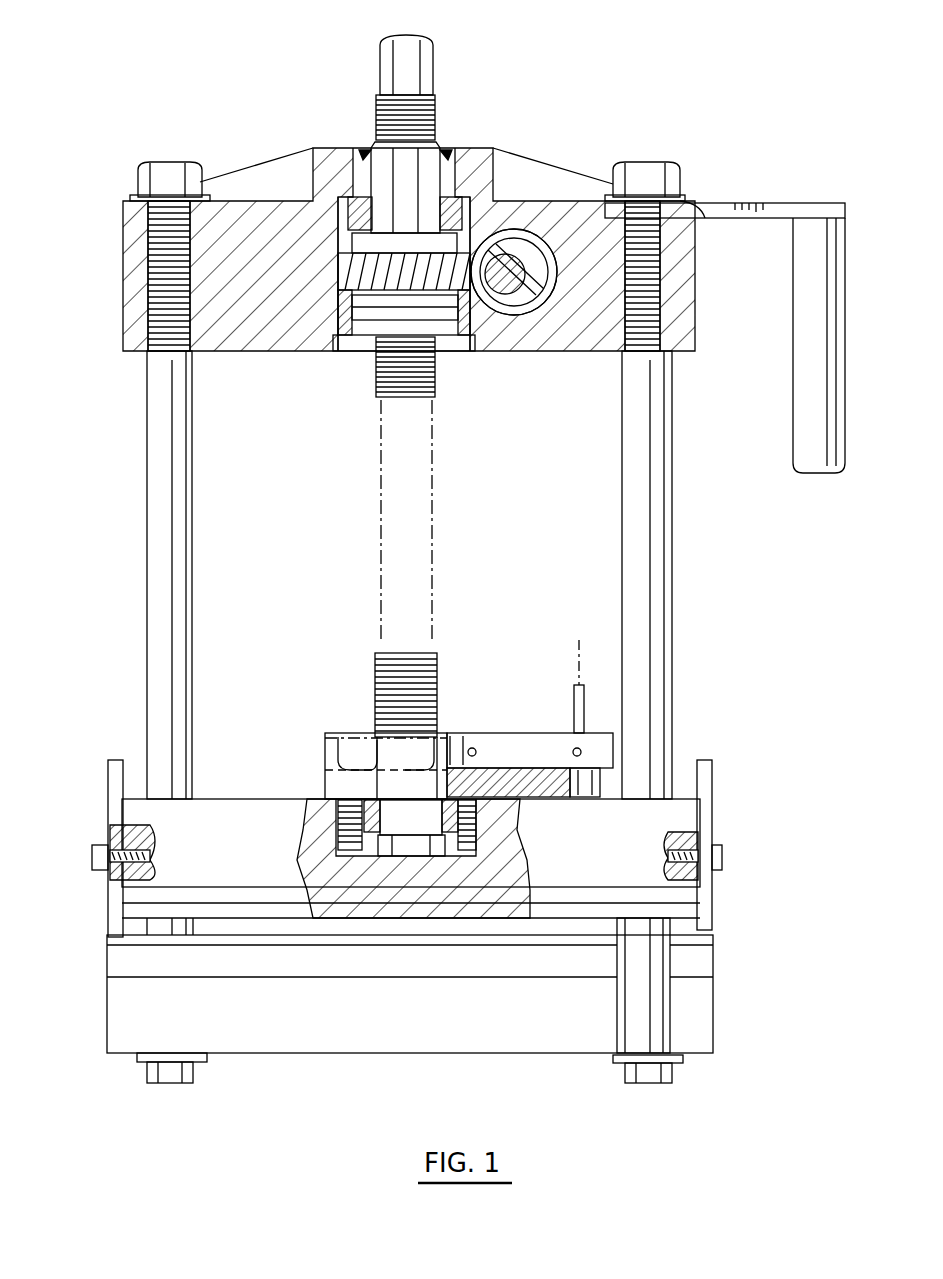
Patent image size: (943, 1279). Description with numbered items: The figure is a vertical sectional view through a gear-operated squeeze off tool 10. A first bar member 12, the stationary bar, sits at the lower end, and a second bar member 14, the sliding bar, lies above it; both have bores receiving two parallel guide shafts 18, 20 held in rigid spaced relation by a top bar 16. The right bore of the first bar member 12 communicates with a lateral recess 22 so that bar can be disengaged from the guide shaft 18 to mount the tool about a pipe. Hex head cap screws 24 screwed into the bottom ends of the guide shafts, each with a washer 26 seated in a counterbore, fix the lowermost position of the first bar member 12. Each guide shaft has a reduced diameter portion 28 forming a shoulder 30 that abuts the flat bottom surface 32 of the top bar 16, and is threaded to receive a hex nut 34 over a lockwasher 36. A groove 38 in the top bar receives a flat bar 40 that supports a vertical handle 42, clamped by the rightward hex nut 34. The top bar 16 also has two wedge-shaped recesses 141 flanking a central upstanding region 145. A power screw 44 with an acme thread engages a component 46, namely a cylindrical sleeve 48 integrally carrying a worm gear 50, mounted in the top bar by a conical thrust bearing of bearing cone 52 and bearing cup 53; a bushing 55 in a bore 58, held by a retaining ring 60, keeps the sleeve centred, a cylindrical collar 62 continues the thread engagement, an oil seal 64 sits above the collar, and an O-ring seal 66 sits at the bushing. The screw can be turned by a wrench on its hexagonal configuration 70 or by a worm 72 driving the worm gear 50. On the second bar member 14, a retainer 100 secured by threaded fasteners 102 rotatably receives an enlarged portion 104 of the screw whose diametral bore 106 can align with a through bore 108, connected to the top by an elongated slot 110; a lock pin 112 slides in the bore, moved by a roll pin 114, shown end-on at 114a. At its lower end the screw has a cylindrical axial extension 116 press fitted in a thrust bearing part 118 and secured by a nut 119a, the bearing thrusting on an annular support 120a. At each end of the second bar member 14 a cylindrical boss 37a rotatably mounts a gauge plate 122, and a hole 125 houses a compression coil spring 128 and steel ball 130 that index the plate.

The gear-operated squeeze off tool 10 is at (735, 567).
The first bar member 12 is at (700, 1002).
The second bar member 14 is at (218, 812).
The top bar 16 is at (555, 205).
The guide shaft 18 is at (660, 535).
The guide shaft 20 is at (148, 520).
The lateral recess 22 is at (620, 988).
The hex head cap screw 24 is at (188, 1078).
The washer 26 is at (140, 1060).
The reduced diameter portion 28 is at (123, 286).
The shoulder 30 is at (125, 368).
The flat bottom surface 32 is at (600, 352).
The hex nut 34 is at (145, 168).
The lockwasher 36 is at (135, 198).
The cylindrical boss 37a is at (115, 810).
The groove 38 is at (705, 222).
The flat bar 40 is at (766, 203).
The handle 42 is at (800, 410).
The power screw 44 is at (380, 467).
The component 46 is at (340, 215).
The cylindrical sleeve 48 is at (392, 245).
The worm gear 50 is at (345, 270).
The bearing cone 52 is at (350, 195).
The bearing cup 53 is at (348, 200).
The bushing 55 is at (445, 350).
The bore 58 is at (350, 305).
The retaining ring 60 is at (482, 350).
The cylindrical collar 62 is at (430, 145).
The oil seal 64 is at (450, 150).
The O-ring seal 66 is at (338, 350).
The hexagonal configuration 70 is at (412, 55).
The worm 72 is at (509, 205).
The retainer 100 is at (505, 795).
The threaded fastener 102 is at (340, 810).
The enlarged portion 104 is at (498, 765).
The diametral bore 106 is at (385, 745).
The through bore 108 is at (328, 760).
The elongated slot 110 is at (484, 768).
The lock pin 112 is at (612, 750).
The roll pin 114 is at (578, 675).
The roll pin position 114a is at (600, 785).
The cylindrical axial extension 116 is at (345, 805).
The thrust bearing part 118 is at (440, 805).
The nut 119a is at (385, 845).
The annular support 120a is at (465, 900).
The gauge plate 122 is at (108, 915).
The hole 125 is at (685, 875).
The compression coil spring 128 is at (690, 845).
The steel ball 130 is at (720, 848).
The wedge-shaped recess 141 is at (245, 178).
The central upstanding region 145 is at (342, 180).